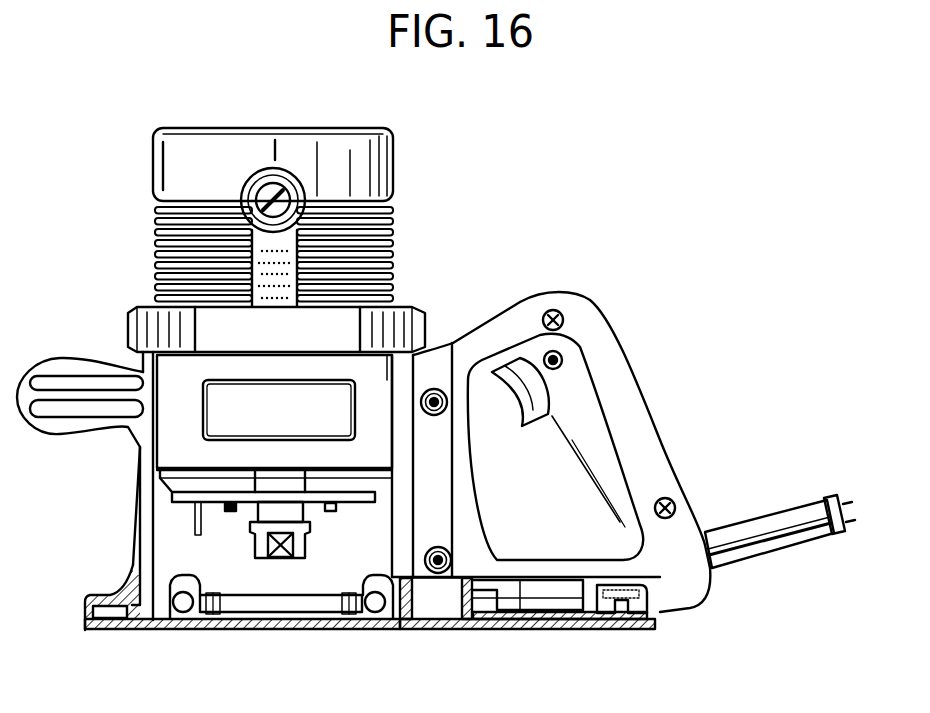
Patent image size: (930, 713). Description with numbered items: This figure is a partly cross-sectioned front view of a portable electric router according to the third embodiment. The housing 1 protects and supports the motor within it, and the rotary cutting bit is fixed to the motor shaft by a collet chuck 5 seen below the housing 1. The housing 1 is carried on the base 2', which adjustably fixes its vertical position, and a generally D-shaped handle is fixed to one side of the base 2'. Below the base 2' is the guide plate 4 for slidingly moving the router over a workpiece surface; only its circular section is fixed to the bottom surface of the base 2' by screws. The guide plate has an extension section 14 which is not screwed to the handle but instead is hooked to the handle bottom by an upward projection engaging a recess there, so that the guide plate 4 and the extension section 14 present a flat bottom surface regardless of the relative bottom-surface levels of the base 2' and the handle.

The housing 1 is at (393, 172).
The base 2' is at (85, 491).
The guide plate 4 is at (168, 633).
The collet chuck 5 is at (312, 542).
The extension section 14 is at (470, 628).